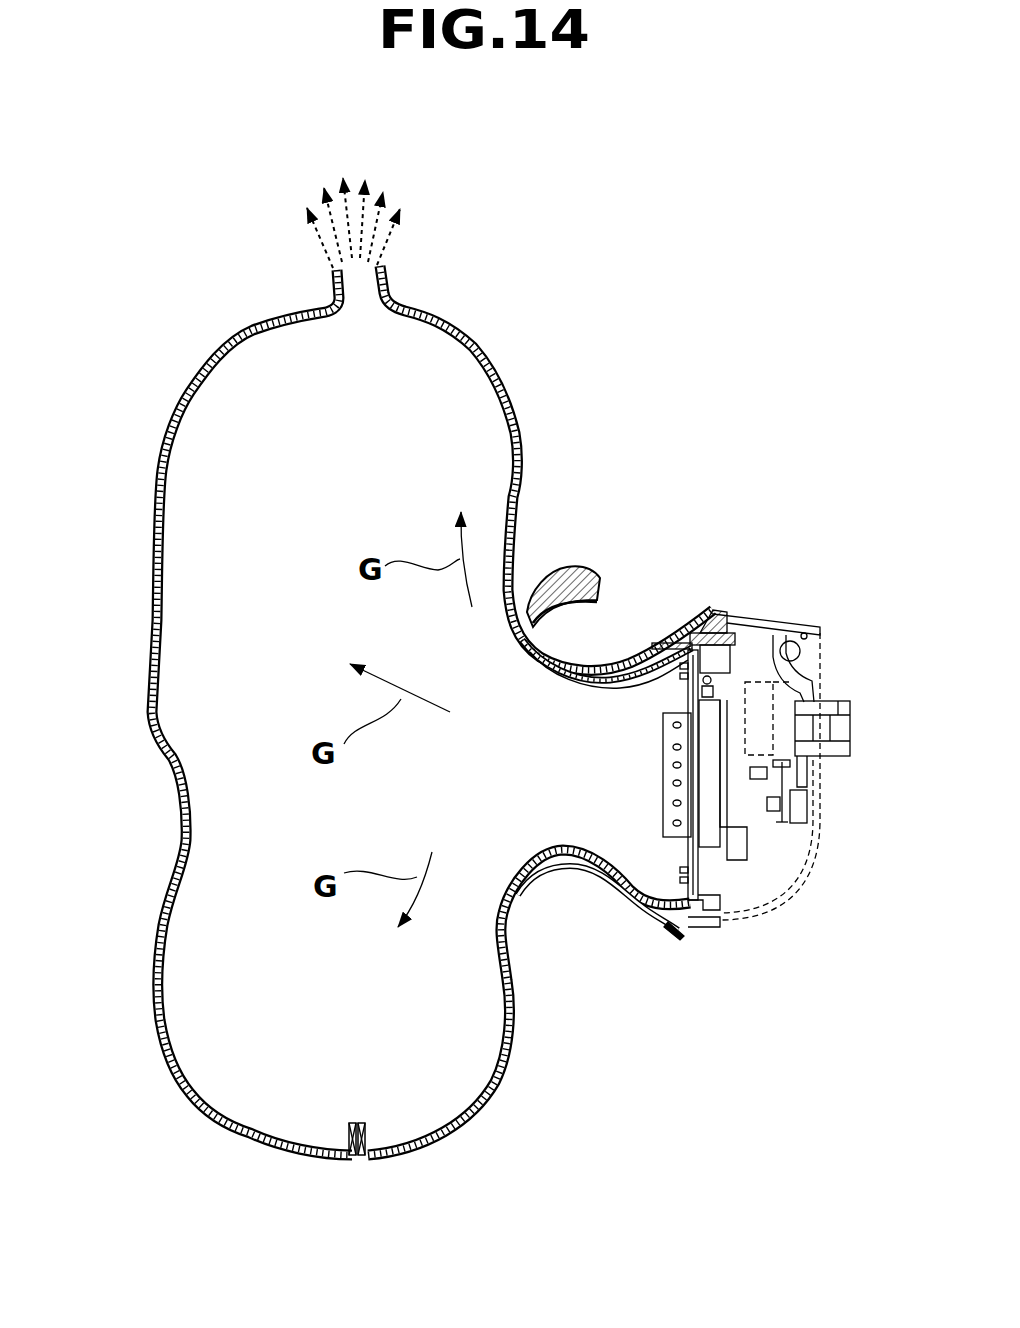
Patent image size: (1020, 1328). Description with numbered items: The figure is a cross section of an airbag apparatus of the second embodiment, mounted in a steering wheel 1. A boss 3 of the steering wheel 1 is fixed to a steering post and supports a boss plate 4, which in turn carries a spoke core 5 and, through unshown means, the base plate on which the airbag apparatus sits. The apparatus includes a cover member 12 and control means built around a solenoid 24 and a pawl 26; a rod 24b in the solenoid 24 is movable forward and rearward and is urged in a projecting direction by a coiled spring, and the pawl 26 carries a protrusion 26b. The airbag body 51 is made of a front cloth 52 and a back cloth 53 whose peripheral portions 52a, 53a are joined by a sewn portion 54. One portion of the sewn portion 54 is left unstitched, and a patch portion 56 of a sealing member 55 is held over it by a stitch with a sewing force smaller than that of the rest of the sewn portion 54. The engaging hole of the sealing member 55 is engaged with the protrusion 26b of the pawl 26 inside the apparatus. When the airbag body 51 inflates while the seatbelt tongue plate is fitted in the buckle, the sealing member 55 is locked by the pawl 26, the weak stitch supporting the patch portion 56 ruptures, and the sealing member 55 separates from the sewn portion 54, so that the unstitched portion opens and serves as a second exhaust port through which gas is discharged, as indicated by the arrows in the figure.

The steering wheel 1 is at (800, 716).
The boss 3 is at (850, 709).
The boss plate 4 is at (778, 633).
The spoke core 5 is at (802, 652).
The cover member 12 is at (586, 657).
The solenoid 24 is at (718, 682).
The rod 24b is at (713, 682).
The pawl 26 is at (748, 663).
The protrusion 26b is at (717, 626).
The airbag body 51 is at (390, 710).
The front cloth 52 is at (152, 727).
The peripheral portion 52a is at (330, 292).
The back cloth 53 is at (516, 1043).
The peripheral portion 53a is at (388, 280).
The sewn portion 54 is at (410, 230).
The sealing member 55 is at (607, 575).
The patch portion 56 is at (570, 565).